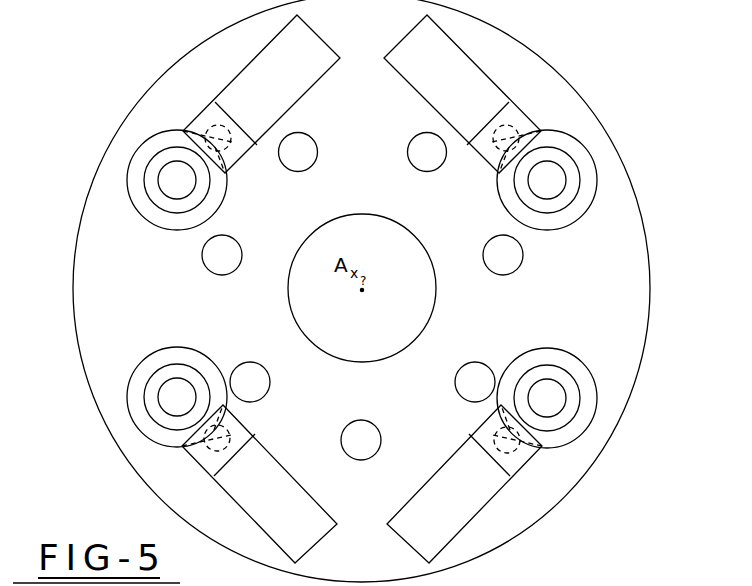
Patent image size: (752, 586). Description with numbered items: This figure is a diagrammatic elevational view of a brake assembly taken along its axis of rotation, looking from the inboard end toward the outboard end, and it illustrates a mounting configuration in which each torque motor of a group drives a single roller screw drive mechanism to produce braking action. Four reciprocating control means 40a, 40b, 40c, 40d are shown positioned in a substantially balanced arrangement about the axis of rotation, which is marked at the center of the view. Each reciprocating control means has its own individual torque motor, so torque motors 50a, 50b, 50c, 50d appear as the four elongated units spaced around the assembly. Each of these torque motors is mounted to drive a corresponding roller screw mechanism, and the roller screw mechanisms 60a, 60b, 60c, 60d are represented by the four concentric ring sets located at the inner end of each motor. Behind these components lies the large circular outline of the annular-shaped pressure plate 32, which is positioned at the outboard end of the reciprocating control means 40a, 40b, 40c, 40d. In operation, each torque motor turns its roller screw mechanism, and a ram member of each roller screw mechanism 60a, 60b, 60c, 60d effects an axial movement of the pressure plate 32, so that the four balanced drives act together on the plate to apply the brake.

The annular-shaped pressure plate 32 is at (650, 265).
The reciprocating control means 40a is at (178, 121).
The reciprocating control means 40b is at (553, 118).
The reciprocating control means 40c is at (172, 453).
The reciprocating control means 40d is at (550, 460).
The torque motor 50a is at (258, 80).
The torque motor 50b is at (462, 75).
The torque motor 50c is at (278, 527).
The torque motor 50d is at (463, 507).
The roller screw mechanism 60a is at (138, 172).
The roller screw mechanism 60b is at (590, 178).
The roller screw mechanism 60c is at (137, 392).
The roller screw mechanism 60d is at (592, 402).